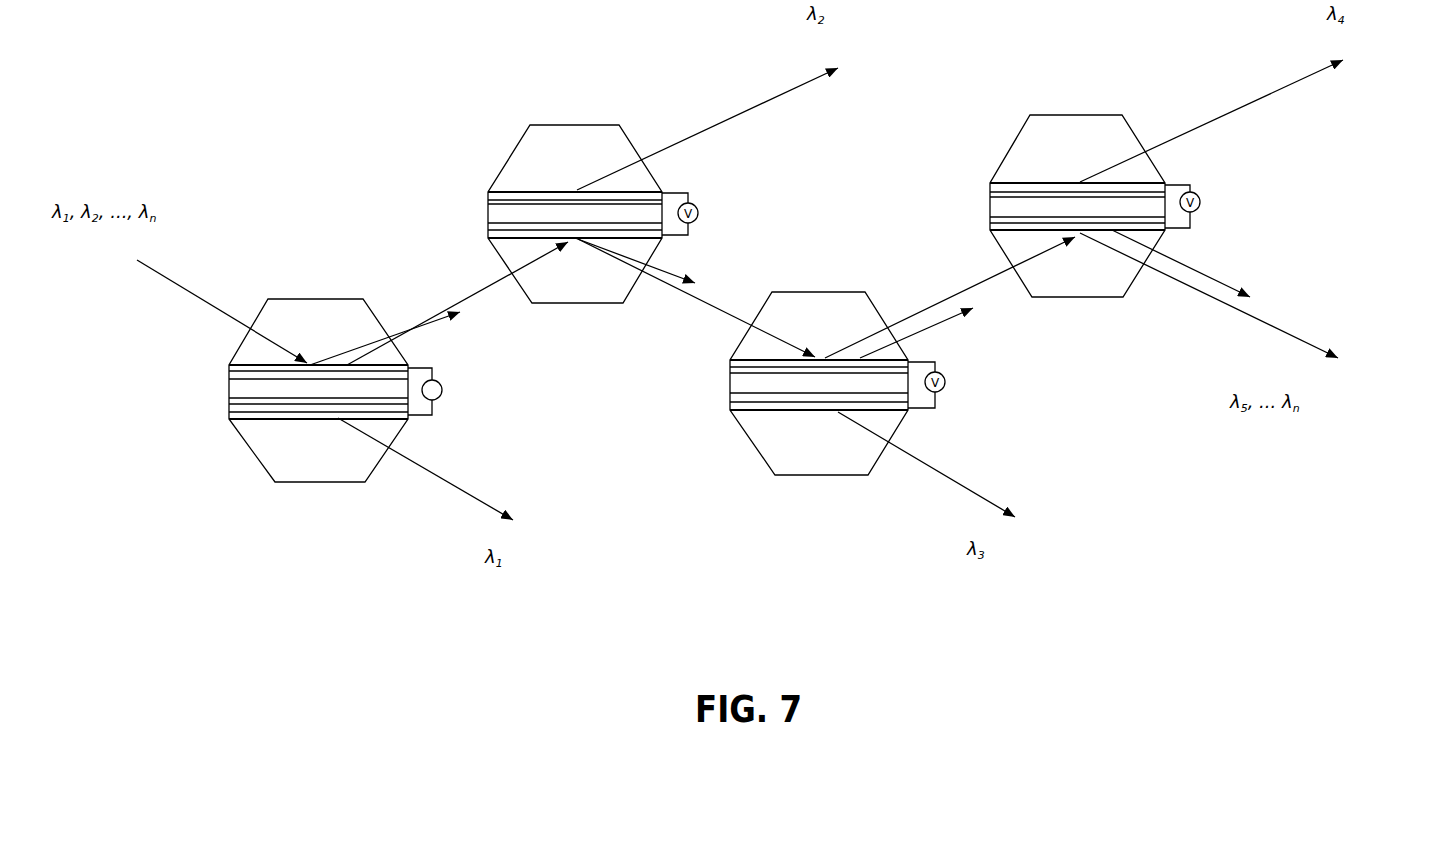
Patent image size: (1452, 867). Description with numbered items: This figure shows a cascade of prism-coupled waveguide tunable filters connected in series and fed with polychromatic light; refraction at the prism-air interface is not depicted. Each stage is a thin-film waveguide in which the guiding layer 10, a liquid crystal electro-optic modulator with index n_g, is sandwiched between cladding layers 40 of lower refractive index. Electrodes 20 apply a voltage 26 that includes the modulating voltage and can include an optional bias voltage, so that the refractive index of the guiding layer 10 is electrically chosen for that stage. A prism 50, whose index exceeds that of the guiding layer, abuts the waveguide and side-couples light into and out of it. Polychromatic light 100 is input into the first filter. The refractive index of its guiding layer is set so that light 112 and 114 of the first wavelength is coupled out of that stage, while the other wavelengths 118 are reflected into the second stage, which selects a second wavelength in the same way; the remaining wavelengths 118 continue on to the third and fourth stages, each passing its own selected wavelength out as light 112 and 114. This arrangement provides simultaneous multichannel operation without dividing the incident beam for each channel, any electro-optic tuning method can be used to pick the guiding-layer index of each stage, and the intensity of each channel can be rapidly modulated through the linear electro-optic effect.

The guiding layer 10 is at (228, 392).
The electrodes 20 is at (228, 365).
The voltage 26 is at (443, 390).
The cladding layers 40 is at (228, 372).
The prism 50 is at (320, 299).
The input beam 100 is at (182, 288).
The coupled-out light 112 is at (417, 333).
The coupled-out light 114 is at (447, 480).
The reflected wavelengths 118 is at (413, 313).